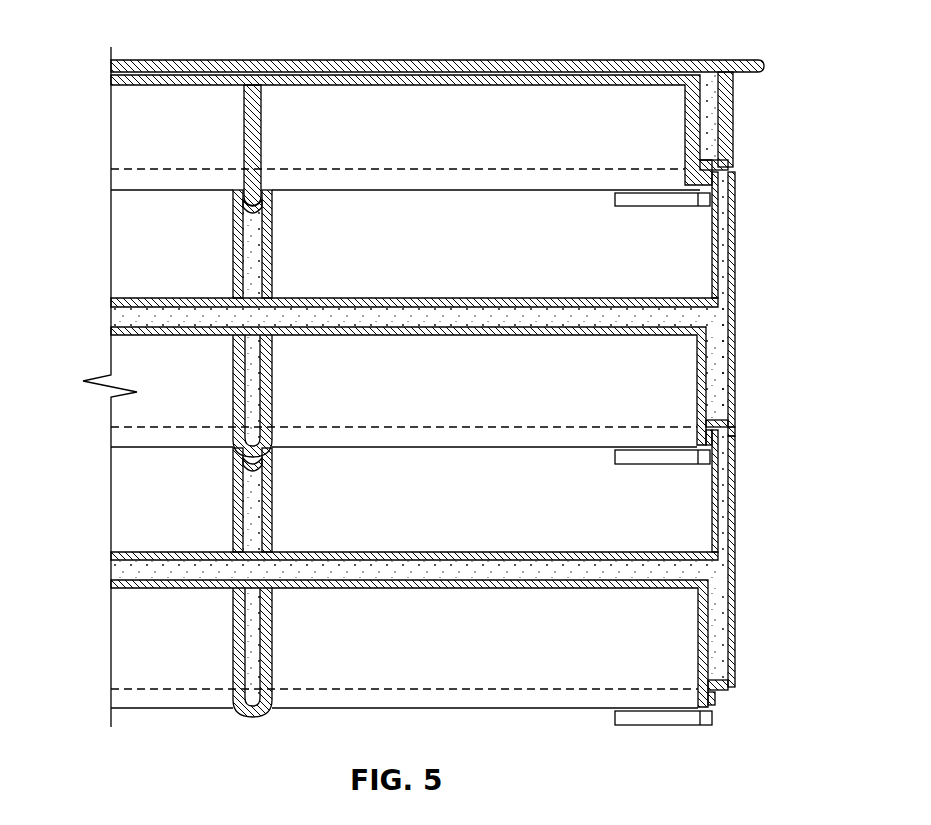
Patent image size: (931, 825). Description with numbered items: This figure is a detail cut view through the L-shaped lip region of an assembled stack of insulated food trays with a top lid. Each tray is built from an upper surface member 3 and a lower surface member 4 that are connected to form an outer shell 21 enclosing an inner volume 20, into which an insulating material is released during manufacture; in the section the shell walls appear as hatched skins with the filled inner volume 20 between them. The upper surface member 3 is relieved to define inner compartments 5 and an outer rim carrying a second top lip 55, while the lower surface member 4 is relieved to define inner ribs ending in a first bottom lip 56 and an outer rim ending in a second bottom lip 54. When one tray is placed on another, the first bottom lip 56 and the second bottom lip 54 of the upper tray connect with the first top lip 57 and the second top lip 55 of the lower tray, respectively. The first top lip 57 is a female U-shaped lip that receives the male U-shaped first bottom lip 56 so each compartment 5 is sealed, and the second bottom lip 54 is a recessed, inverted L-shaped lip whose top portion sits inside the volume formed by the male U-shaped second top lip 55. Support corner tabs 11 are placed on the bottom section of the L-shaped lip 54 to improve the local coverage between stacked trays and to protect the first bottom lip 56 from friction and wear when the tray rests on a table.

The upper surface member 3 is at (570, 300).
The lower surface member 4 is at (560, 335).
The inner compartment 5 is at (470, 300).
The support corner tab 11 is at (693, 207).
The inner volume 20 is at (706, 88).
The outer shell 21 is at (737, 98).
The second bottom lip 54 is at (730, 170).
The second top lip 55 is at (733, 172).
The first bottom lip 56 is at (258, 200).
The first top lip 57 is at (263, 205).